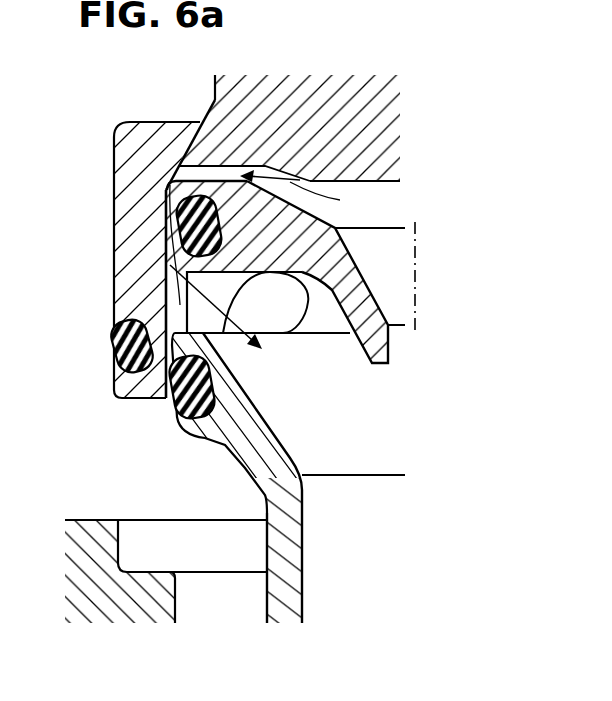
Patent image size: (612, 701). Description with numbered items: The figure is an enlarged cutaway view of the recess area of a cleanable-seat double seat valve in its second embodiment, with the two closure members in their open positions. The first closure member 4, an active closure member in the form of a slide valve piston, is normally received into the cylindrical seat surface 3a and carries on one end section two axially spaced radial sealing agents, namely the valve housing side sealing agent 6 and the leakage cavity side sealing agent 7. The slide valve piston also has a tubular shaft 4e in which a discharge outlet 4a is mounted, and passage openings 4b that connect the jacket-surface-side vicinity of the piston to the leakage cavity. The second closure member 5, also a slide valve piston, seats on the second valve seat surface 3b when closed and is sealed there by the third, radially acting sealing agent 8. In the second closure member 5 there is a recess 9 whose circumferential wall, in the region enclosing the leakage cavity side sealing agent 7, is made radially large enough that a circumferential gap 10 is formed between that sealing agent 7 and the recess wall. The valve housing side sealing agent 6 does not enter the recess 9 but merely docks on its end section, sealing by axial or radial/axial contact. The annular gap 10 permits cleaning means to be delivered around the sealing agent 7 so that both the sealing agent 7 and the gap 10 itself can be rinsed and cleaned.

The cylindrical seat surface 3a is at (178, 600).
The second valve seat surface 3b is at (118, 545).
The first closure member 4 is at (304, 275).
The discharge outlet 4a is at (440, 305).
The passage openings 4b is at (200, 298).
The tubular shaft 4e is at (283, 597).
The second closure member 5 is at (152, 163).
The valve housing side sealing agent 6 is at (203, 380).
The leakage cavity side sealing agent 7 is at (178, 210).
The third sealing agent 8 is at (112, 343).
The recess 9 is at (170, 282).
The circumferential gap 10 is at (168, 243).